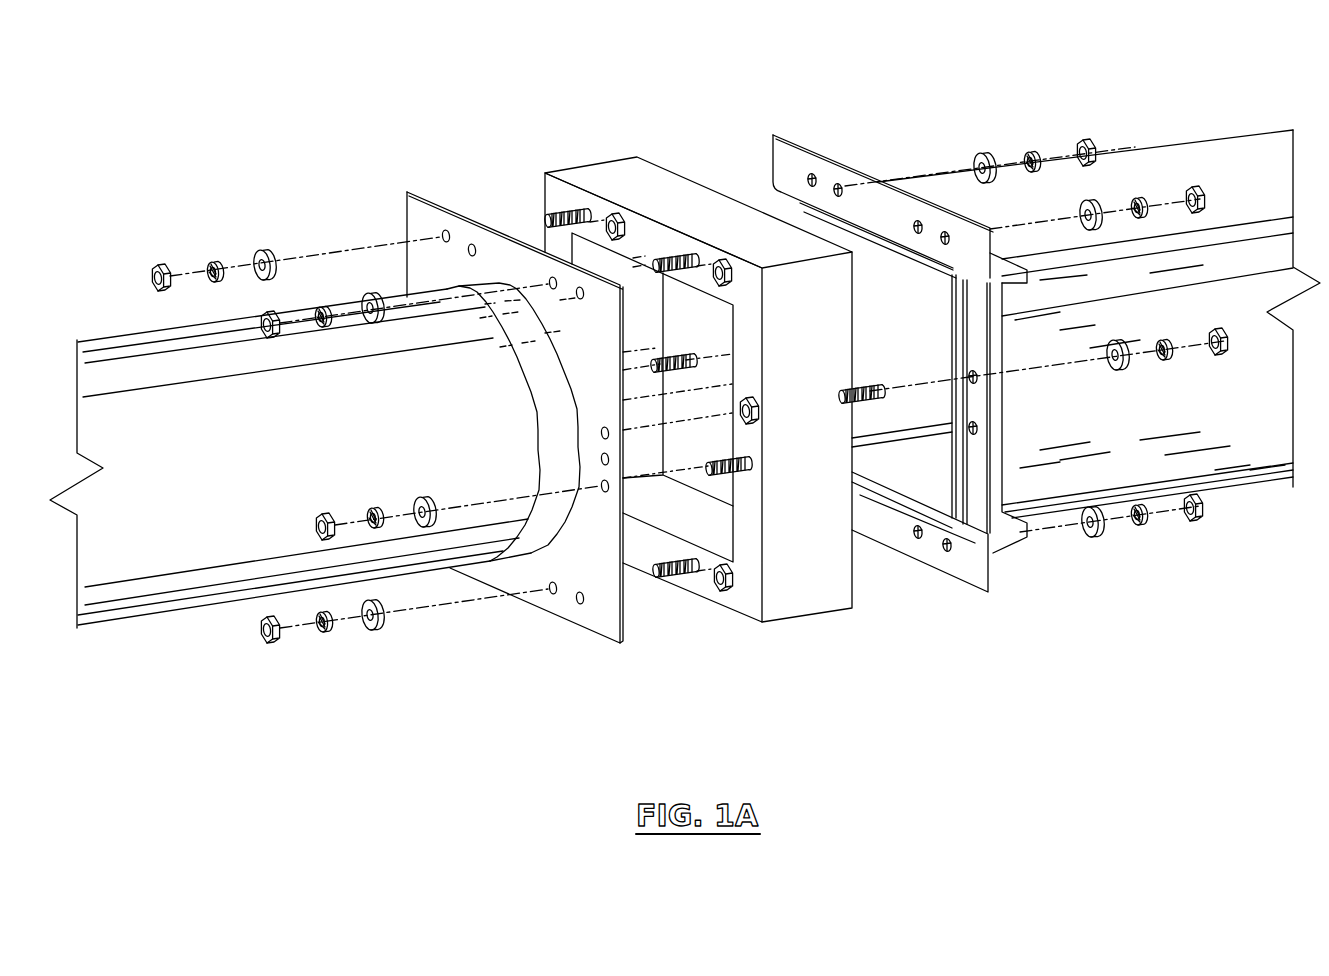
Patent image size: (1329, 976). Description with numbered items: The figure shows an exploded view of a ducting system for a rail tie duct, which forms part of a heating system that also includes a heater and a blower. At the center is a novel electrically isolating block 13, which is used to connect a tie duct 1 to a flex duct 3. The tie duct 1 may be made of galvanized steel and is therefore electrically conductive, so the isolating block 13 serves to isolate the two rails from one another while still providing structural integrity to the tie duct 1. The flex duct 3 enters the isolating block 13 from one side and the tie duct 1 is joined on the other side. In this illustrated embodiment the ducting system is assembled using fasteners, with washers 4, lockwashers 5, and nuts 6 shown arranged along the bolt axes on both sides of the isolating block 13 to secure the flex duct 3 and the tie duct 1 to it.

The tie duct 1 is at (1265, 477).
The flex duct 3 is at (150, 613).
The washers 4 is at (972, 155).
The lockwashers 5 is at (1030, 160).
The nuts 6 is at (1083, 142).
The electrically isolating block 13 is at (579, 166).